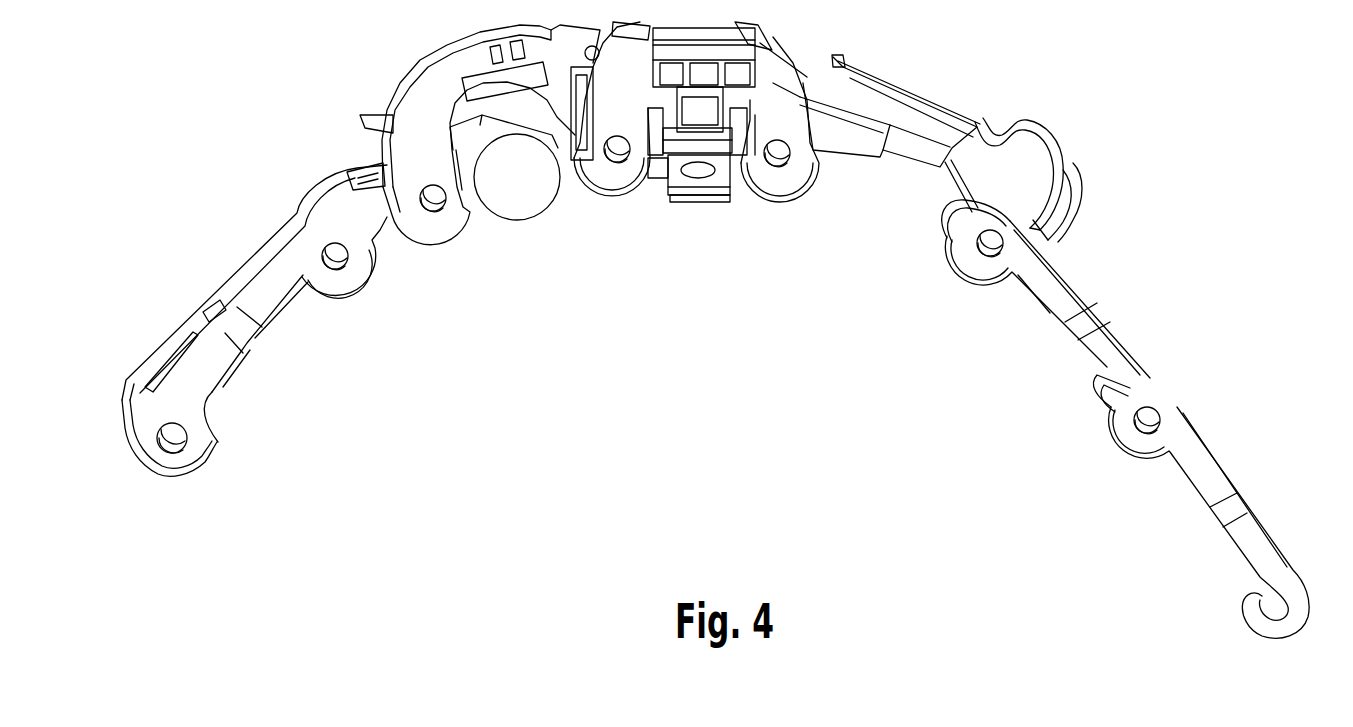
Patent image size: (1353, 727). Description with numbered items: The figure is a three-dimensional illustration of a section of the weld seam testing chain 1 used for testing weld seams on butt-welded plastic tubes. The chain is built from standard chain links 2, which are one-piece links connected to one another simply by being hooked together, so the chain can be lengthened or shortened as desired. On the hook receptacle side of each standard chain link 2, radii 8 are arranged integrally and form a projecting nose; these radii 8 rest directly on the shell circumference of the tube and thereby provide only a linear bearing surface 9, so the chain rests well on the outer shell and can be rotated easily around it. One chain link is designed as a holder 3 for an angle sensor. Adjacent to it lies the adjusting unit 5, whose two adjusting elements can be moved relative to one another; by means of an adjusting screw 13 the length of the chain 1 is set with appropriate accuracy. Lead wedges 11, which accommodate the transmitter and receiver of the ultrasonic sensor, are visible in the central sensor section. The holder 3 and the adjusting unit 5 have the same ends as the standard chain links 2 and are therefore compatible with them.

The weld seam testing chain 1 is at (1206, 247).
The standard chain link 2 is at (223, 270).
The holder 3 is at (401, 93).
The adjusting unit 5 is at (950, 102).
The radii 8 is at (234, 429).
The bearing surface 9 is at (239, 492).
The lead wedge 11 is at (686, 258).
The adjusting screw 13 is at (1112, 133).